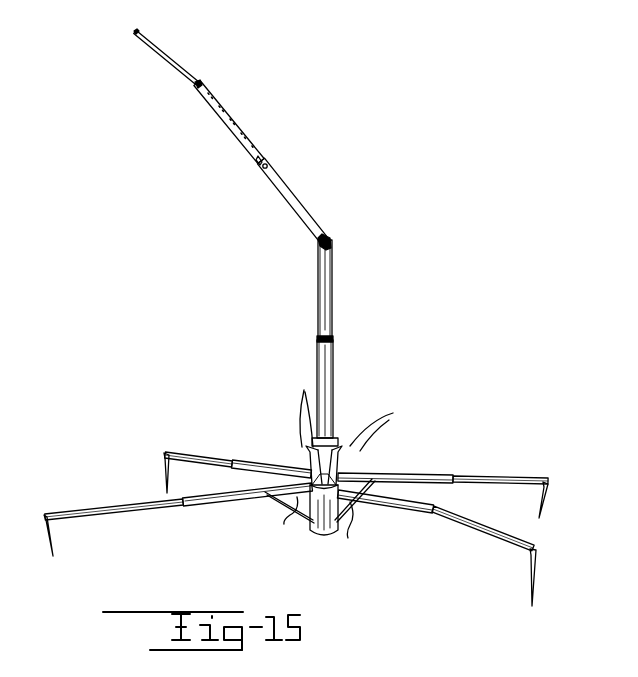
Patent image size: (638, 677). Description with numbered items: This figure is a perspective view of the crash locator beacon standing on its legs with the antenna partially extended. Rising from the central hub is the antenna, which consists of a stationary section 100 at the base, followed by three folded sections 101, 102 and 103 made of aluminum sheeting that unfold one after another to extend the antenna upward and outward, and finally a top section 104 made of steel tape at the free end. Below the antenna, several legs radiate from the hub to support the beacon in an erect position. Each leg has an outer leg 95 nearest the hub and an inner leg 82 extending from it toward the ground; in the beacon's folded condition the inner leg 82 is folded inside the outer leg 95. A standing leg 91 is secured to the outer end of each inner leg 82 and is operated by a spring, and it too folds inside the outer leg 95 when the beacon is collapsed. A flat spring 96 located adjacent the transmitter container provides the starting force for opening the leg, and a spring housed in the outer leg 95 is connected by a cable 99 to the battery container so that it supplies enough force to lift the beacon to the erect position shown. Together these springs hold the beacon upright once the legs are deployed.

The inner leg 82 is at (104, 503).
The standing leg 91 is at (57, 545).
The outer leg 95 is at (260, 470).
The flat spring 96 is at (303, 394).
The cable 99 is at (284, 524).
The stationary section 100 is at (333, 378).
The folded section 101 is at (331, 278).
The folded section 102 is at (286, 194).
The folded section 103 is at (232, 128).
The top section 104 is at (163, 63).